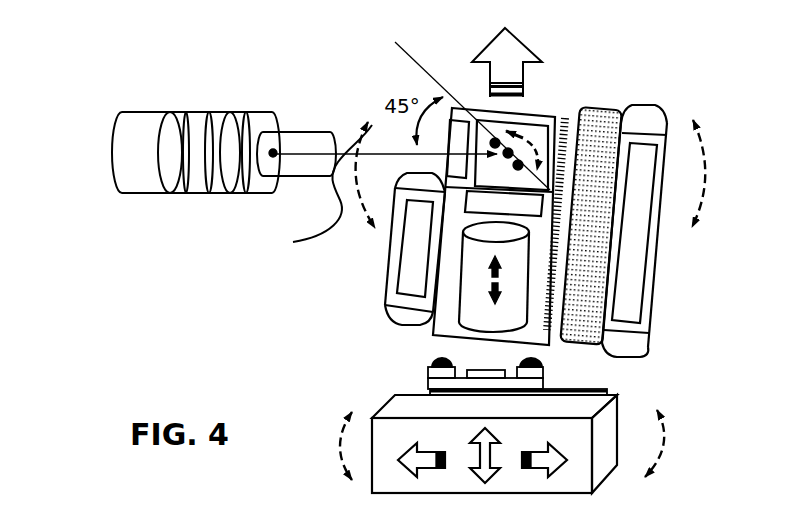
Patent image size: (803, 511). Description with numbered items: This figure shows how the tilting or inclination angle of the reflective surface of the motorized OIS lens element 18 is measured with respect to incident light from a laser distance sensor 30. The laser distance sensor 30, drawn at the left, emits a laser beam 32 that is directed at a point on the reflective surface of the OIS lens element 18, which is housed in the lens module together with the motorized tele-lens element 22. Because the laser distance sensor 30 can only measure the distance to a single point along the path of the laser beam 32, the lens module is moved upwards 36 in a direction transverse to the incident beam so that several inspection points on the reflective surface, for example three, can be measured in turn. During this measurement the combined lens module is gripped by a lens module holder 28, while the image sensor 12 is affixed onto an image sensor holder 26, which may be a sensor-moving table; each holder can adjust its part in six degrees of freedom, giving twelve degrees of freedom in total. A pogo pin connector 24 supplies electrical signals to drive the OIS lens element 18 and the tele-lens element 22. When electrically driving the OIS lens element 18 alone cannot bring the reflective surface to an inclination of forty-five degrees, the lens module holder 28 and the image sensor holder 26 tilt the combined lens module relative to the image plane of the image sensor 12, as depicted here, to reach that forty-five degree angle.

The image sensor 12 is at (427, 373).
The motorized OIS lens element 18 is at (532, 135).
The motorized tele-lens element 22 is at (472, 300).
The pogo pin connector 24 is at (582, 287).
The image sensor holder 26 is at (567, 432).
The lens module holder 28 is at (627, 257).
The laser distance sensor 30 is at (137, 177).
The laser beam 32 is at (314, 191).
The upwards movement 36 is at (530, 52).